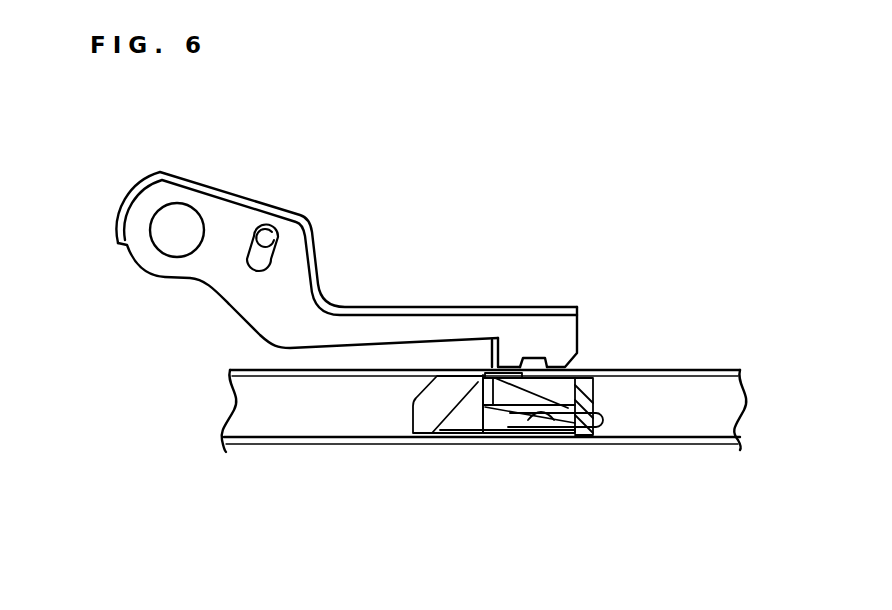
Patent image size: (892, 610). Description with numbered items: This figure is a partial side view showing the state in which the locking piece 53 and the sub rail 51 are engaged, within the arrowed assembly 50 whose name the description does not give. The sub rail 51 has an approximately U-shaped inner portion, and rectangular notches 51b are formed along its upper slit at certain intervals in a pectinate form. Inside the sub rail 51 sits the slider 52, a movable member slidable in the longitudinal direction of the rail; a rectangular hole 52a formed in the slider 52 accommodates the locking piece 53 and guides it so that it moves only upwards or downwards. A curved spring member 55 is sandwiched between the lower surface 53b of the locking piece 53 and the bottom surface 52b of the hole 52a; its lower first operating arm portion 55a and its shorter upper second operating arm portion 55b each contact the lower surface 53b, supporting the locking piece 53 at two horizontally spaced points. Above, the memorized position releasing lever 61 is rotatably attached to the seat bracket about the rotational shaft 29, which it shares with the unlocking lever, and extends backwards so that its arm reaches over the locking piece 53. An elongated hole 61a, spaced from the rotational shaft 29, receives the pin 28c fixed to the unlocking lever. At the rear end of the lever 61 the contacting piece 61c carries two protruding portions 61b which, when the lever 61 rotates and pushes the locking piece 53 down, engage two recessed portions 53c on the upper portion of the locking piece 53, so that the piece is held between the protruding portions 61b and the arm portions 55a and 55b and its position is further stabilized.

The memorized position releasing lever 61 is at (218, 200).
The elongated hole 61a is at (283, 260).
The protruding portions 61b is at (515, 360).
The contacting piece 61c is at (540, 327).
The pin 28c is at (278, 230).
The rotational shaft 29 is at (162, 243).
The lock mechanism 50 is at (634, 349).
The sub rail 51 is at (296, 440).
The notches 51b is at (295, 372).
The slider 52 is at (418, 420).
The hole 52a is at (490, 417).
The bottom surface 52b is at (522, 415).
The locking piece 53 is at (578, 372).
The lower surface 53b is at (481, 432).
The recessed portions 53c is at (503, 367).
The spring member 55 is at (607, 418).
The first operating arm portion 55a is at (553, 428).
The second operating arm portion 55b is at (572, 432).